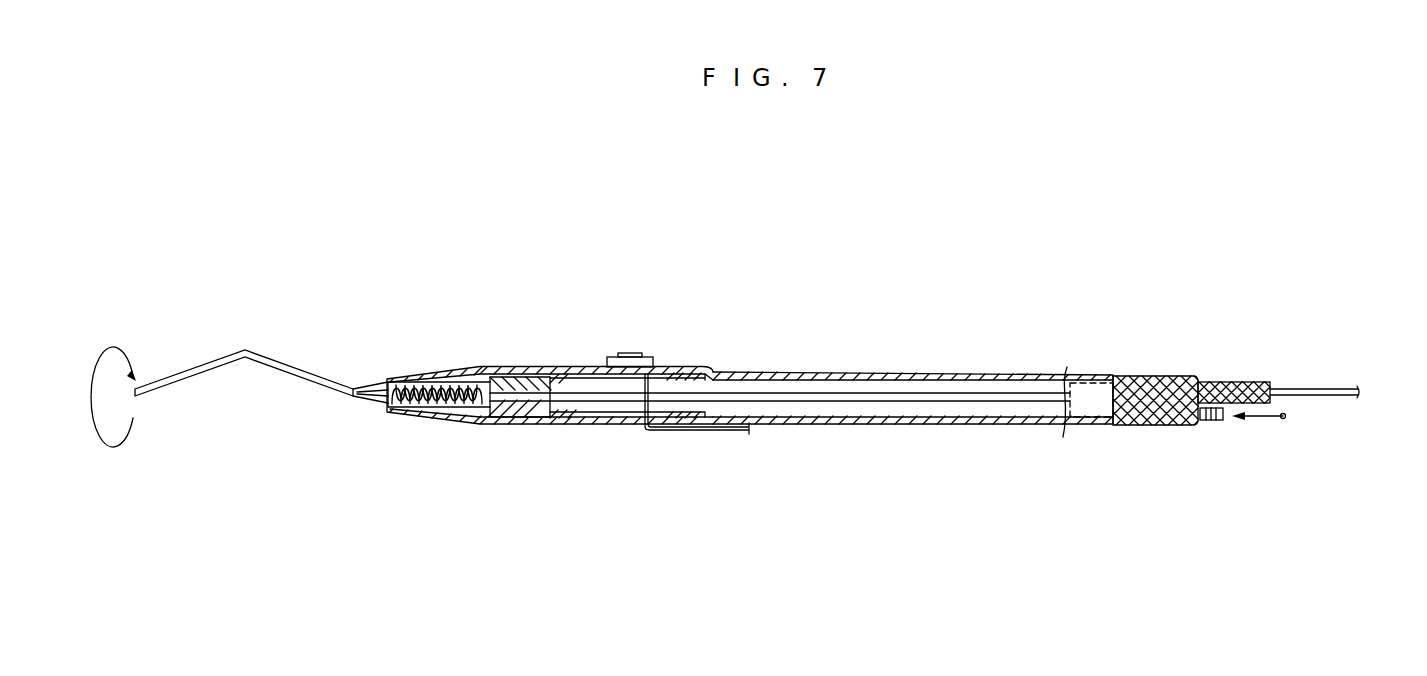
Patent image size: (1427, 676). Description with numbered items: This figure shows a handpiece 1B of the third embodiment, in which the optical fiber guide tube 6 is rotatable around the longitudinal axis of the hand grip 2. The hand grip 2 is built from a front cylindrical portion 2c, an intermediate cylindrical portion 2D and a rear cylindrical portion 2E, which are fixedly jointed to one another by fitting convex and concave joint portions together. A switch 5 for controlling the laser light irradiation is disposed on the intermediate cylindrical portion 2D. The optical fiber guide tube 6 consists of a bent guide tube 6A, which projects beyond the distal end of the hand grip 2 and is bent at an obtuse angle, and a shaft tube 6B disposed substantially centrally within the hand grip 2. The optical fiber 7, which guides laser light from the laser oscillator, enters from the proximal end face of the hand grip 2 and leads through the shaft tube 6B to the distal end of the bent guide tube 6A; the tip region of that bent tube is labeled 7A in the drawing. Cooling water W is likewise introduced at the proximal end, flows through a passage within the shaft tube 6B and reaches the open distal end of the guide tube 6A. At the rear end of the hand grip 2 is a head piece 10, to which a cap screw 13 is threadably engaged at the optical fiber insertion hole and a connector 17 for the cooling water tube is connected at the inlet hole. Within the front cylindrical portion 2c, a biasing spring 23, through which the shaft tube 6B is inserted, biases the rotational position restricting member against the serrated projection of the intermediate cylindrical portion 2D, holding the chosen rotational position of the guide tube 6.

The handpiece 1B is at (811, 328).
The hand grip 2 is at (723, 362).
The front cylindrical portion 2c is at (517, 421).
The intermediate cylindrical portion 2D is at (614, 421).
The rear cylindrical portion 2E is at (830, 419).
The switch 5 is at (650, 356).
The optical fiber guide tube 6 is at (297, 356).
The bent guide tube 6A is at (262, 368).
The shaft tube 6B is at (740, 398).
The optical fiber 7 is at (1313, 388).
The distal tip end 7A is at (134, 398).
The head piece 10 is at (1150, 376).
The cap screw 13 is at (1236, 382).
The connector for the cooling water tube 17 is at (1213, 423).
The biasing spring 23 is at (427, 413).